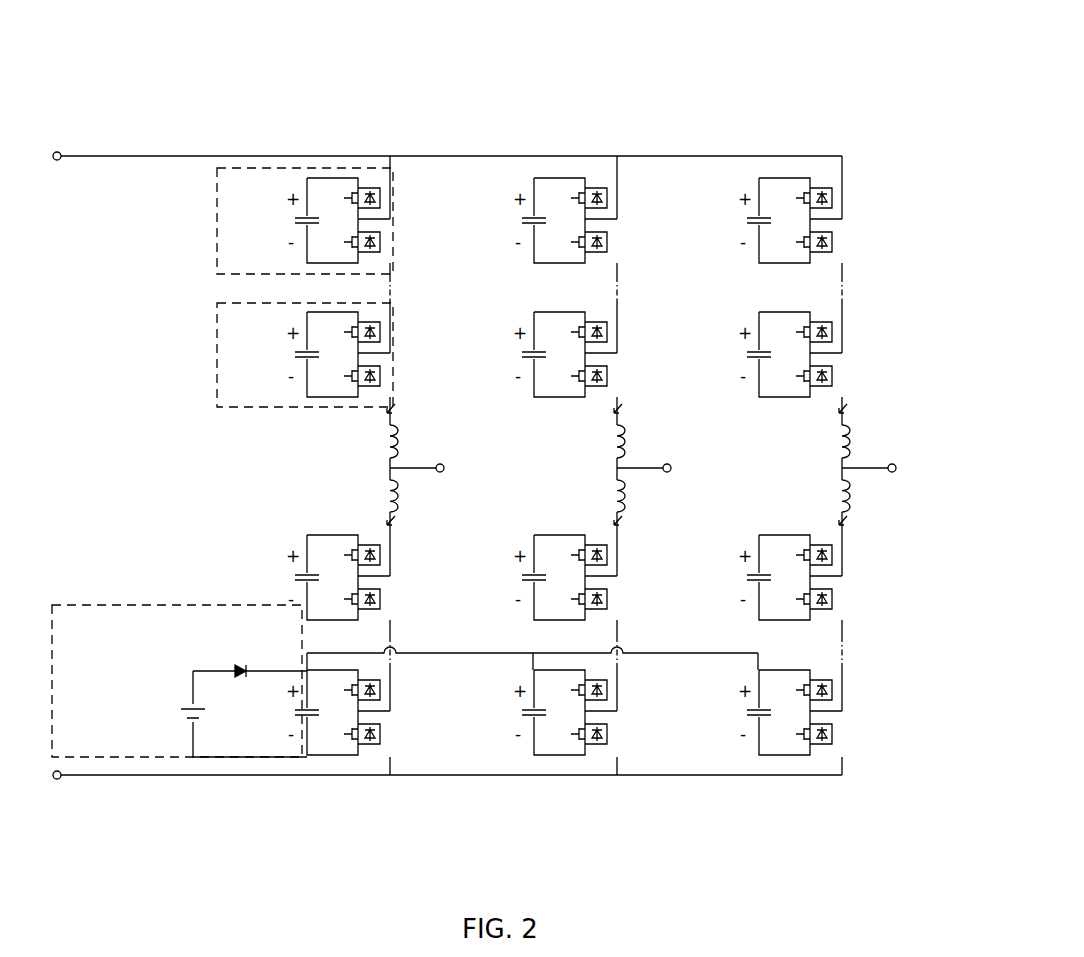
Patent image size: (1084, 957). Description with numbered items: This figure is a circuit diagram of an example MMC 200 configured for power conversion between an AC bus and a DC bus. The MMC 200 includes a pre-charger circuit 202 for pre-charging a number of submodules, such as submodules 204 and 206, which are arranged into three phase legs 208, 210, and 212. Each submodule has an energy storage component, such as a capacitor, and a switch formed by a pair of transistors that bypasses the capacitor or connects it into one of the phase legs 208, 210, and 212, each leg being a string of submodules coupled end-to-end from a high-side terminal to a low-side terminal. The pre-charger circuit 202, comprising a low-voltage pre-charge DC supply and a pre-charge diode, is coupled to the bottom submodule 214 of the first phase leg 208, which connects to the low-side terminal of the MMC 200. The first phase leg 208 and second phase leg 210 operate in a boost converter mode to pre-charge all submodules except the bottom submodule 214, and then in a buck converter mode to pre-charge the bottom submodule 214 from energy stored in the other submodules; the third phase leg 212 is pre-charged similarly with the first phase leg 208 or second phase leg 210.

The MMC 200 is at (261, 33).
The pre-charger circuit 202 is at (177, 756).
The submodule 204 is at (215, 242).
The submodule 206 is at (215, 371).
The first phase leg 208 is at (393, 120).
The second phase leg 210 is at (621, 118).
The third phase leg 212 is at (848, 120).
The bottom submodule 214 is at (352, 794).